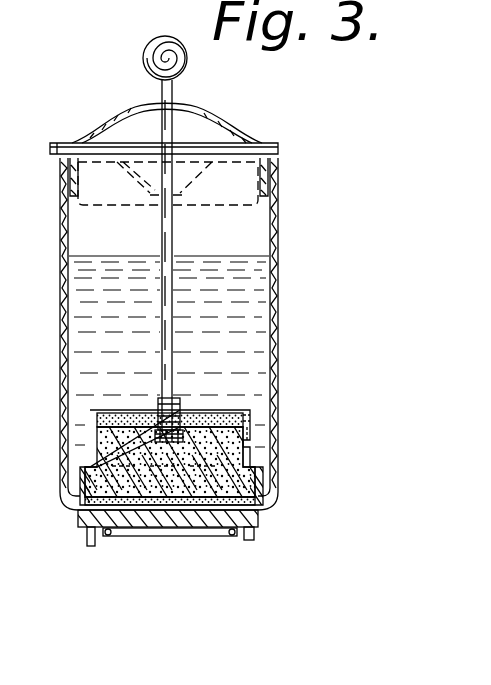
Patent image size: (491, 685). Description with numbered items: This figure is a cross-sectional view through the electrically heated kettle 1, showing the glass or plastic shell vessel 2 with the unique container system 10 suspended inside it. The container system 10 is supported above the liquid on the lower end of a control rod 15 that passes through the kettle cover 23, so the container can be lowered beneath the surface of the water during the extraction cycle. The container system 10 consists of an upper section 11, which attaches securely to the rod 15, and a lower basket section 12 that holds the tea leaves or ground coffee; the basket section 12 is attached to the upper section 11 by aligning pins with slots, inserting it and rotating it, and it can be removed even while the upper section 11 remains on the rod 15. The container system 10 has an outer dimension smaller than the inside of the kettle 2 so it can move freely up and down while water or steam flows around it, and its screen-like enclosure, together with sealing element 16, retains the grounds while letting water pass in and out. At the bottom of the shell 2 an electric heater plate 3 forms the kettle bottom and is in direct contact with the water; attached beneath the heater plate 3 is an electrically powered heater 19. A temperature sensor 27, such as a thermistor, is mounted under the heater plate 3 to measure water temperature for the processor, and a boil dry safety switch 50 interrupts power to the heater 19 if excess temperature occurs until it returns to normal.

The electrically heated kettle 1 is at (107, 71).
The kettle shell vessel 2 is at (278, 293).
The heater plate 3 is at (160, 518).
The container system 10 is at (256, 436).
The upper section 11 is at (100, 433).
The lower basket section 12 is at (125, 510).
The control rod 15 is at (158, 89).
The seal 16 is at (255, 413).
The electrically powered heater 19 is at (195, 532).
The kettle cover 23 is at (222, 118).
The temperature sensor 27 is at (85, 543).
The boil dry safety switch 50 is at (252, 536).